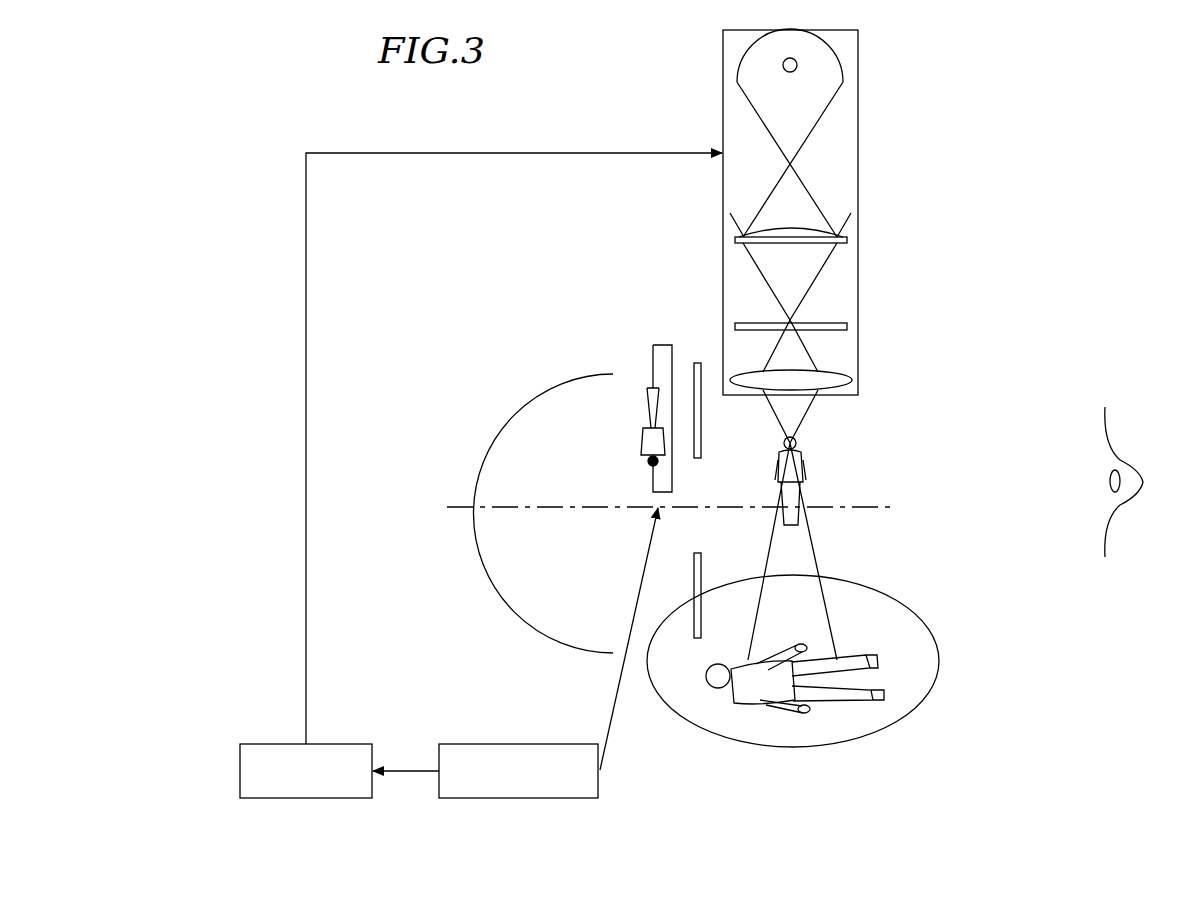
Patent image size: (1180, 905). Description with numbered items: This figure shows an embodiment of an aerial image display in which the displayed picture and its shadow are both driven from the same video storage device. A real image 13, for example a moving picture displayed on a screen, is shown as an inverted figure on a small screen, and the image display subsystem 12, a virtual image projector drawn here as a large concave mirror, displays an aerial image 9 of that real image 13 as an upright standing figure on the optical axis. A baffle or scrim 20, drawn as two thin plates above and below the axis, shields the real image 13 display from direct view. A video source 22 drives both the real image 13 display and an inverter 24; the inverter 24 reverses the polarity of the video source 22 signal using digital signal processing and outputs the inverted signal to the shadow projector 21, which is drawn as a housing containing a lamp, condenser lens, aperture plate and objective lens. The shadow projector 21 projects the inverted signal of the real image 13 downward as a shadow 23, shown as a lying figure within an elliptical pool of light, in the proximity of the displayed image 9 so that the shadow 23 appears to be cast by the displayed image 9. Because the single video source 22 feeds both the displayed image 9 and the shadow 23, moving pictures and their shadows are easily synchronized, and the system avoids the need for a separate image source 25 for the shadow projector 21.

The aerial image 9 is at (803, 462).
The image display subsystem 12 is at (493, 585).
The real image 13 is at (660, 345).
The baffle or scrim 20 is at (696, 363).
The shadow projector 21 is at (858, 147).
The video source 22 is at (513, 744).
The shadow 23 is at (885, 623).
The inverter 24 is at (328, 744).
The separate image source 25 is at (848, 326).